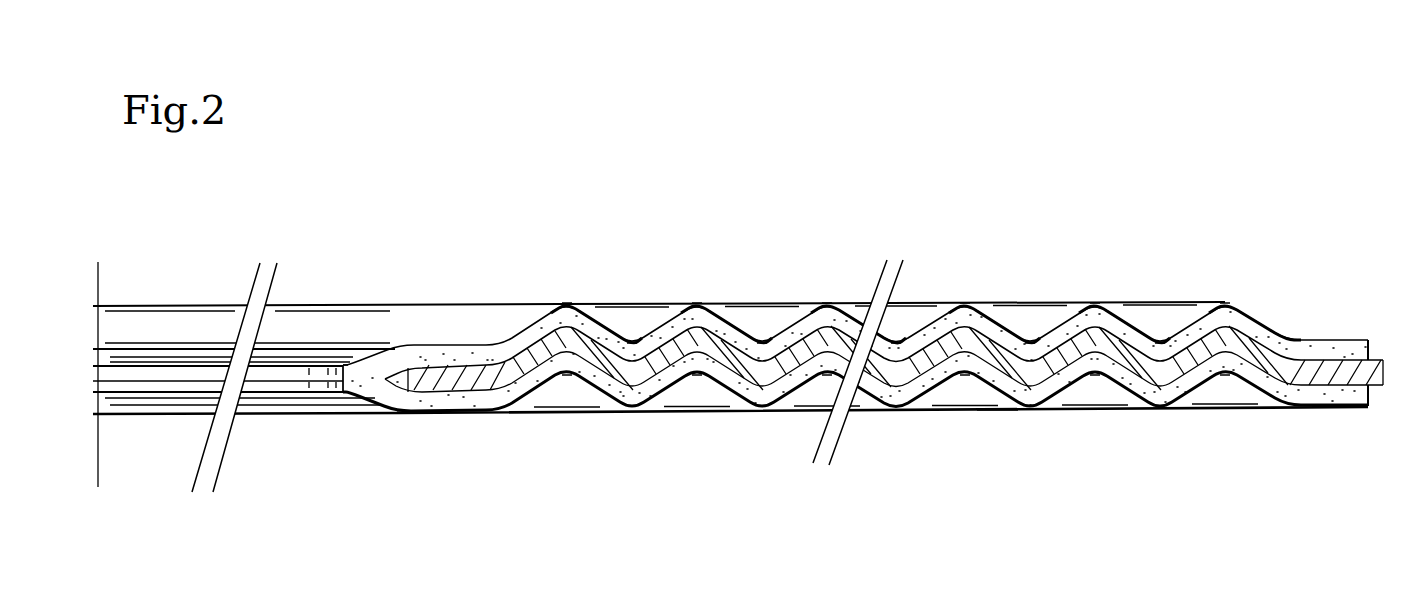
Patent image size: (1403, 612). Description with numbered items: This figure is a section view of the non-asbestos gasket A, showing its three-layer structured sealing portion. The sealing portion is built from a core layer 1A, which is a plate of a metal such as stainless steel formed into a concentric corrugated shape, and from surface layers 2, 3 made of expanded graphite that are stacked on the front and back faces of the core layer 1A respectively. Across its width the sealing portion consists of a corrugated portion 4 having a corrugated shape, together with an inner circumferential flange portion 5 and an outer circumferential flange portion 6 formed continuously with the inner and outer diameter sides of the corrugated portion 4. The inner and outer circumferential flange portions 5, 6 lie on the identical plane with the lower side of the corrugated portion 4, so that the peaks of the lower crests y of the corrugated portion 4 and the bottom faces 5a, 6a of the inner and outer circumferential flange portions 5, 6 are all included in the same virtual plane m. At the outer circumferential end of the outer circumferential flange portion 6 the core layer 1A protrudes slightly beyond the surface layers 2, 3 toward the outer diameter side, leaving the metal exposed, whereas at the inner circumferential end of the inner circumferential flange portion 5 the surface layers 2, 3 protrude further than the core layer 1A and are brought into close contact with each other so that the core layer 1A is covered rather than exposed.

The non-asbestos gasket A is at (1052, 286).
The corrugated portion 4 is at (717, 302).
The inner circumferential flange portion 5 is at (413, 343).
The outer circumferential flange portion 6 is at (1317, 340).
The bottom face of inner circumferential flange portion 5a is at (444, 413).
The bottom face of outer circumferential flange portion 6a is at (1313, 405).
The surface layer 2 is at (612, 326).
The surface layer 3 is at (600, 393).
The core layer 1A is at (899, 378).
The crests y is at (568, 302).
The virtual plane m is at (987, 411).